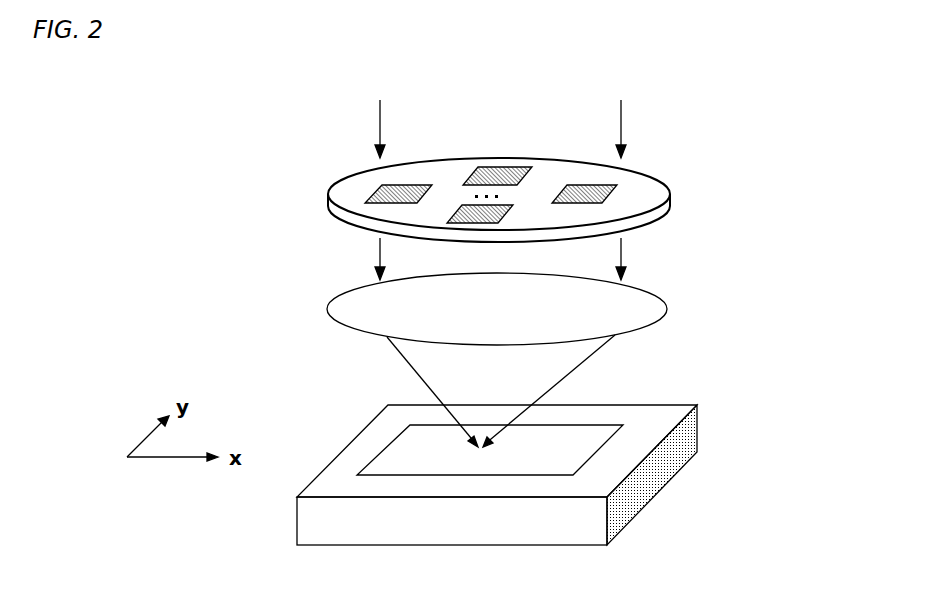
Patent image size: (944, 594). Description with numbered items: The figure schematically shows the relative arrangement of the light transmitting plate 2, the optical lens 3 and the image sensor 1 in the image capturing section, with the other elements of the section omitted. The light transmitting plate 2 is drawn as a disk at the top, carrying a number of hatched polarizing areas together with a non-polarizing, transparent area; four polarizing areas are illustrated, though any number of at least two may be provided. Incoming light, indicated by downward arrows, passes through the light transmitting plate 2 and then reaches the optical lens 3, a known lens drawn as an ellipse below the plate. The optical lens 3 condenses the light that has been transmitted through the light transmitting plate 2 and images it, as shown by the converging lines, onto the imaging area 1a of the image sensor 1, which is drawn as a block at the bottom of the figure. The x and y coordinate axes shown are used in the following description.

The image sensor 1 is at (692, 430).
The imaging area 1a is at (402, 453).
The light transmitting plate 2 is at (640, 184).
The optical lens 3 is at (648, 295).